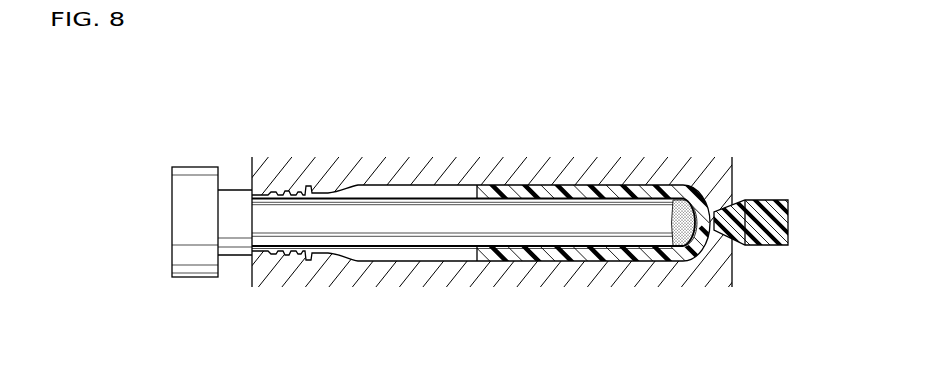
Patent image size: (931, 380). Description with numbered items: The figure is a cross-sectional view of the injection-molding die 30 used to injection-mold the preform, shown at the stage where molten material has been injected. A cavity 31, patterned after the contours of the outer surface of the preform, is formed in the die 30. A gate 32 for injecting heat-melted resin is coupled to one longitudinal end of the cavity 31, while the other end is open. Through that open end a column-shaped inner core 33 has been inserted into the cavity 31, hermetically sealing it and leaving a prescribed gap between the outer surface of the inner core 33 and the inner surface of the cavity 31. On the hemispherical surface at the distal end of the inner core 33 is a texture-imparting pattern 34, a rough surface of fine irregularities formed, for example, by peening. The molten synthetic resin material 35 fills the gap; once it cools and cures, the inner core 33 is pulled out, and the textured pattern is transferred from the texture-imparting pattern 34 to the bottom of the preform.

The injection-molding die 30 is at (622, 165).
The cavity 31 is at (513, 257).
The gate 32 is at (737, 203).
The inner core 33 is at (195, 191).
The texture-imparting pattern 34 is at (693, 243).
The synthetic resin material 35 is at (608, 257).